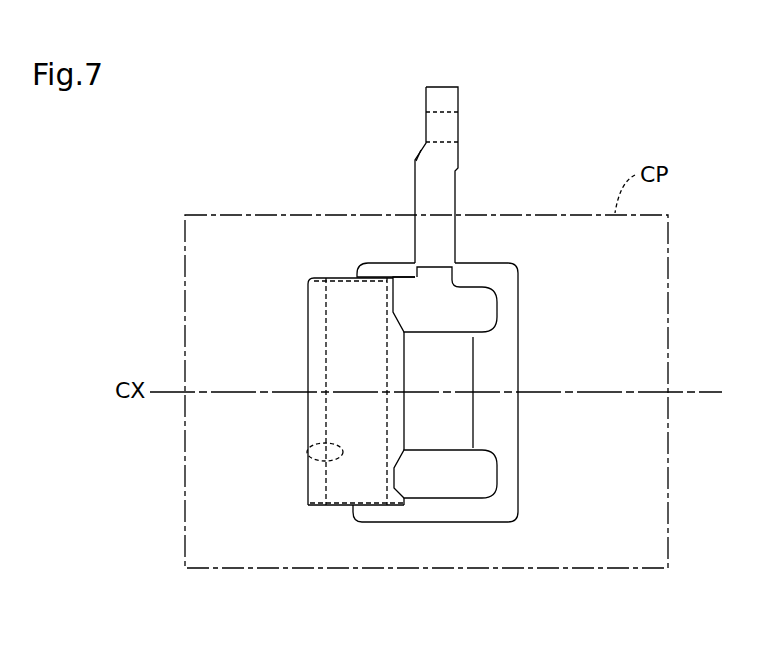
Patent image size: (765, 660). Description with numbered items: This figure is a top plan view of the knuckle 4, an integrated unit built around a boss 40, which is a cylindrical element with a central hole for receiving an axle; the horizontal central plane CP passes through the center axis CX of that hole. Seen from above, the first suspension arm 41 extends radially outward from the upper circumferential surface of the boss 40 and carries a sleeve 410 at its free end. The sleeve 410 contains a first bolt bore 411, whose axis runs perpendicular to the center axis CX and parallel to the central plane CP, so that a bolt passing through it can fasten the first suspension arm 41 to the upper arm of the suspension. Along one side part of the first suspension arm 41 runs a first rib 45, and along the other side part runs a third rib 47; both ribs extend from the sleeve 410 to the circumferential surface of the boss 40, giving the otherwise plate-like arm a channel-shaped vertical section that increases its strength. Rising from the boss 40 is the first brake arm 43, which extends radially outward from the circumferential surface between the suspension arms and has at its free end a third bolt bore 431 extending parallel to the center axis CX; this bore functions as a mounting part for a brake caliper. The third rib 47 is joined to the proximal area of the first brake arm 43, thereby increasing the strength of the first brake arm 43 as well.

The knuckle 4 is at (161, 178).
The boss 40 is at (478, 392).
The first suspension arm 41 is at (452, 412).
The first brake arm 43 is at (475, 175).
The third bolt bore 431 is at (453, 112).
The first rib 45 is at (483, 475).
The third rib 47 is at (482, 295).
The sleeve 410 is at (308, 391).
The first bolt bore 411 is at (312, 458).